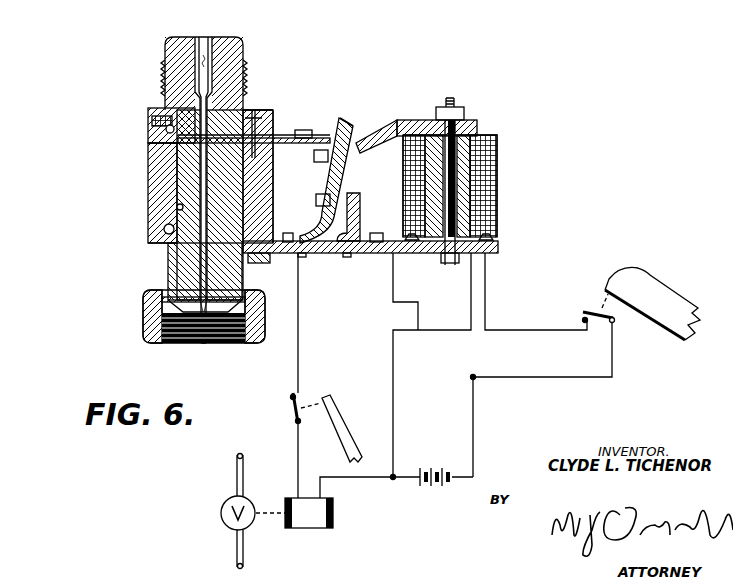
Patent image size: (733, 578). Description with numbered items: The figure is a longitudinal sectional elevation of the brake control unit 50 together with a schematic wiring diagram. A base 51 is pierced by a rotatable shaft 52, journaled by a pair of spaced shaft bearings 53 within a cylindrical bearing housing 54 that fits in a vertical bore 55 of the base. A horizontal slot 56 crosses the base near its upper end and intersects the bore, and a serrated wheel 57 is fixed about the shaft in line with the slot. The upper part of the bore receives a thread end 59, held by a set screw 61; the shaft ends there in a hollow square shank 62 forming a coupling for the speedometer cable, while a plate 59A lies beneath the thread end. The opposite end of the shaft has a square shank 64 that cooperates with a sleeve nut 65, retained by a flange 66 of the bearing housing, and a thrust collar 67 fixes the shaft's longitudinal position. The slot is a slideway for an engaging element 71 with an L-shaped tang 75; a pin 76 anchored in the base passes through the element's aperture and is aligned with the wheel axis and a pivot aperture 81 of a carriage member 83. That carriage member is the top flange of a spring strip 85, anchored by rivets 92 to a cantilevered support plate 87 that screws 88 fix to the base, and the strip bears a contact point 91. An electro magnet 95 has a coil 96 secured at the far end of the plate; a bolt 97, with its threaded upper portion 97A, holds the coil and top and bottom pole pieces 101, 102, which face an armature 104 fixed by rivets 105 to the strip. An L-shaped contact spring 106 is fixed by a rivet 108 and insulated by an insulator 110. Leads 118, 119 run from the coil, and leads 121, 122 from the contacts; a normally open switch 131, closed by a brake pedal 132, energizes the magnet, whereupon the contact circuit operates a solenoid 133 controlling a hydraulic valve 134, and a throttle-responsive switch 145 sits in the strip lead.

The embodiment of the invention 50 is at (140, 206).
The base 51 is at (148, 165).
The rotatable shaft 52 is at (146, 208).
The shaft bearings 53 is at (203, 205).
The bearing housing 54 is at (167, 272).
The vertical bore 55 is at (178, 210).
The horizontal slot 56 is at (268, 110).
The rotatable element or wheel 57 is at (166, 129).
The thread end 59 is at (165, 52).
The diaphragm plate 59A is at (185, 137).
The set screw 61 is at (150, 112).
The hollow square shank 62 is at (205, 40).
The square shank 64 is at (200, 343).
The sleeve nut 65 is at (145, 328).
The flange 66 is at (150, 296).
The thrust collar 67 is at (175, 108).
The engaging element 71 is at (280, 137).
The L-shaped tang 75 is at (305, 130).
The pin 76 is at (251, 152).
The pivot aperture 81 is at (316, 140).
The carriage member 83 is at (318, 137).
The spring strip 85 is at (337, 262).
The support plate 87 is at (490, 253).
The screws 88 is at (258, 263).
The electrical contact point 91 is at (342, 120).
The rivets 92 is at (287, 240).
The electro magnet 95 is at (494, 213).
The coil 96 is at (492, 193).
The bolt 97 is at (450, 265).
The bolt 97A is at (438, 122).
The top pole piece 101 is at (477, 124).
The bottom pole piece 102 is at (357, 193).
The armature 104 is at (348, 122).
The rivets 105 is at (302, 253).
The L-shaped contact spring 106 is at (335, 170).
The rivet 108 is at (373, 240).
The insulator 110 is at (347, 253).
The electrical lead 118 is at (487, 315).
The electrical lead 119 is at (471, 320).
The electrical lead 121 is at (305, 372).
The electrical lead 122 is at (393, 297).
The normally open switch 131 is at (586, 316).
The brake pedal 132 is at (652, 288).
The solenoid 133 is at (300, 528).
The hydraulic valve 134 is at (228, 525).
The switch 145 is at (294, 405).